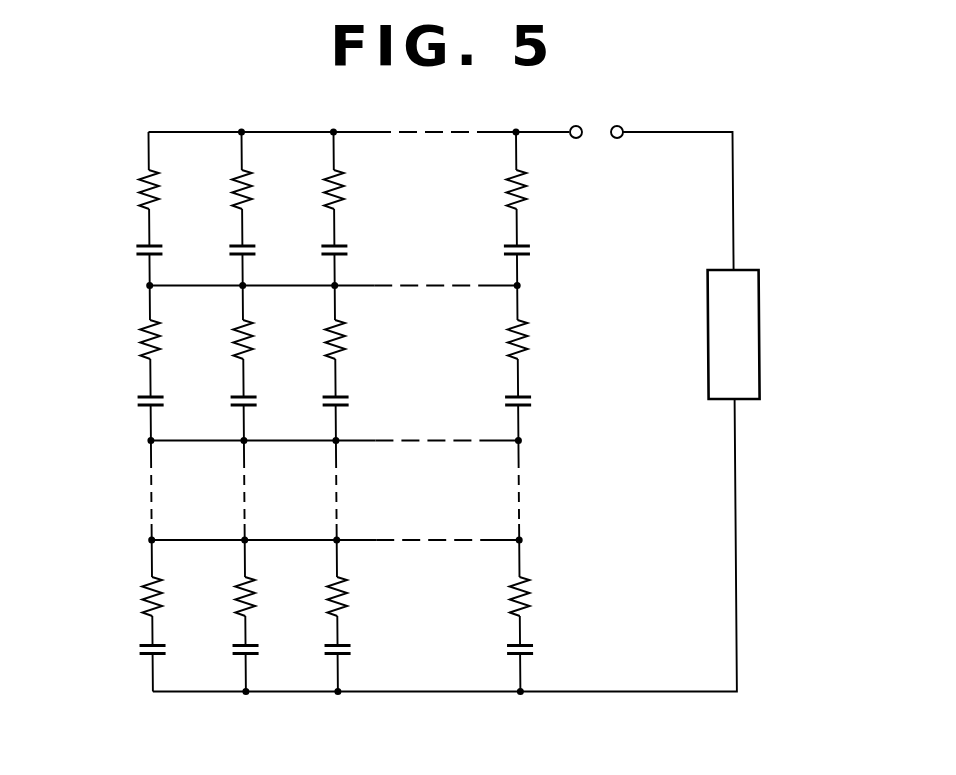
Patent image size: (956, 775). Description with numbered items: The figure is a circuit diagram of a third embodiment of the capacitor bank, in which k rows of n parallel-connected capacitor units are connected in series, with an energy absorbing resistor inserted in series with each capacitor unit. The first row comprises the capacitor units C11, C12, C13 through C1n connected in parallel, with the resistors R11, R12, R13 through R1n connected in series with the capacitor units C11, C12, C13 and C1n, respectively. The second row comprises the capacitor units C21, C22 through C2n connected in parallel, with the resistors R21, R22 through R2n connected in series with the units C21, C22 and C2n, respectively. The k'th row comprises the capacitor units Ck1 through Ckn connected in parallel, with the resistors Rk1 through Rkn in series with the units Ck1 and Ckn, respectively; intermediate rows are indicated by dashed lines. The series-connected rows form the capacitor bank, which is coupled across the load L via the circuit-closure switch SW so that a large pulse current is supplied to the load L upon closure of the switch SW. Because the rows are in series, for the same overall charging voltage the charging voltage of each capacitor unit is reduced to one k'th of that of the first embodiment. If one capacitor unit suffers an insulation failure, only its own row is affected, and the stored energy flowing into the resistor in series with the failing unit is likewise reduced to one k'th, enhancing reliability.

The energy absorbing resistor R11 is at (123, 182).
The capacitor unit C11 is at (125, 233).
The energy absorbing resistor R12 is at (219, 182).
The capacitor unit C12 is at (222, 233).
The energy absorbing resistor R13 is at (310, 182).
The capacitor unit C13 is at (313, 233).
The energy absorbing resistor R1n is at (490, 180).
The capacitor unit C1n is at (491, 233).
The energy absorbing resistor R21 is at (123, 337).
The capacitor unit C21 is at (125, 387).
The energy absorbing resistor R22 is at (220, 337).
The capacitor unit C22 is at (221, 387).
The energy absorbing resistor R2n is at (490, 337).
The capacitor unit C2n is at (492, 387).
The energy absorbing resistor Rk1 is at (124, 594).
The capacitor unit Ck1 is at (127, 664).
The energy absorbing resistor Rkn is at (491, 593).
The capacitor unit Ckn is at (494, 664).
The circuit-closure switch SW is at (596, 117).
The load L is at (748, 334).